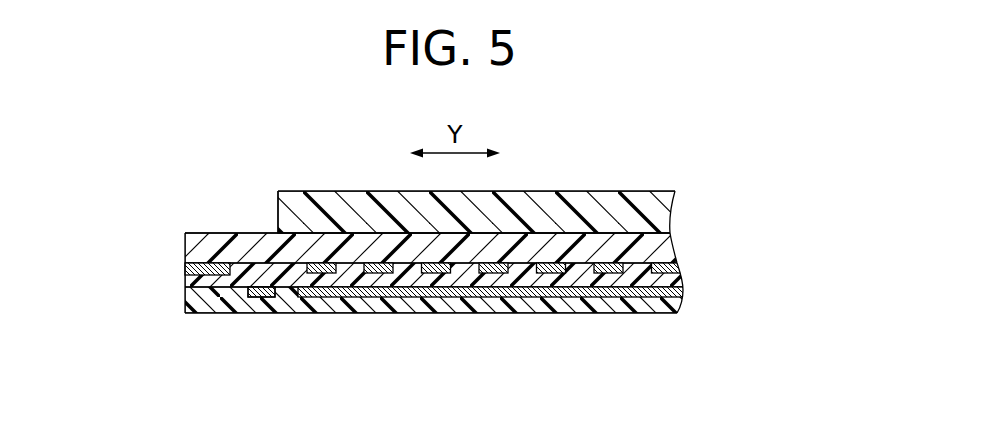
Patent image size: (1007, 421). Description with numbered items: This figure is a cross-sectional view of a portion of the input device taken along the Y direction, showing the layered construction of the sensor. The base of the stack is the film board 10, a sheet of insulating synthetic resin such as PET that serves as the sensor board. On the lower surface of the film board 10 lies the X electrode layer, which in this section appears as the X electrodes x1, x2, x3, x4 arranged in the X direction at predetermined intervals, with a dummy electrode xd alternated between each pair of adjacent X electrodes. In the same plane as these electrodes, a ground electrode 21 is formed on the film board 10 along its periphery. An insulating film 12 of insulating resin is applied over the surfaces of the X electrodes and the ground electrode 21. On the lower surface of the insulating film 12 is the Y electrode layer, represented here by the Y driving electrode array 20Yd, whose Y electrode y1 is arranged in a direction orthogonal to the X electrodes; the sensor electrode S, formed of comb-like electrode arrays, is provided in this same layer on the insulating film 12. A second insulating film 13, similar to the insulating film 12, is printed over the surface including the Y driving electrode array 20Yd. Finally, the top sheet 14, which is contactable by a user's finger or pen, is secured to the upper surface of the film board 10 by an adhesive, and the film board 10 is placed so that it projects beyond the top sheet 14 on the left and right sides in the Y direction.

The top sheet 14 is at (660, 216).
The film board 10 is at (676, 255).
The insulating film 12 is at (185, 280).
The insulating film 13 is at (211, 298).
The ground electrode 21 is at (185, 269).
The Y electrode y1 is at (546, 302).
The Y driving electrode array 20Yd is at (683, 295).
The sensor electrode S is at (263, 294).
The X electrode x1 is at (328, 266).
The X electrode x2 is at (432, 266).
The X electrode x3 is at (548, 266).
The X electrode x4 is at (664, 266).
The dummy electrode xd is at (384, 266).